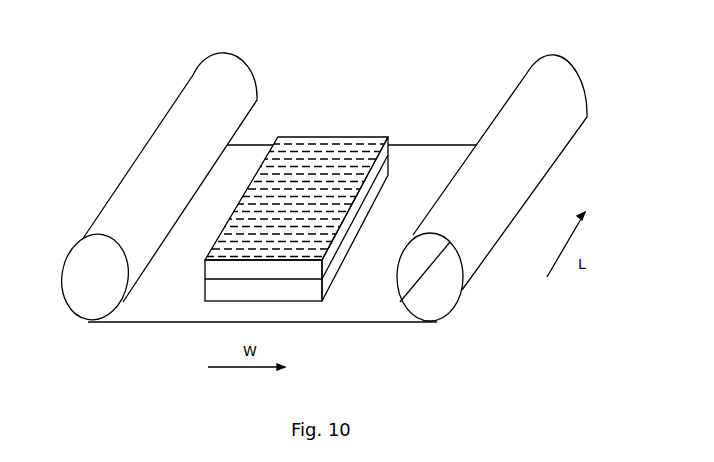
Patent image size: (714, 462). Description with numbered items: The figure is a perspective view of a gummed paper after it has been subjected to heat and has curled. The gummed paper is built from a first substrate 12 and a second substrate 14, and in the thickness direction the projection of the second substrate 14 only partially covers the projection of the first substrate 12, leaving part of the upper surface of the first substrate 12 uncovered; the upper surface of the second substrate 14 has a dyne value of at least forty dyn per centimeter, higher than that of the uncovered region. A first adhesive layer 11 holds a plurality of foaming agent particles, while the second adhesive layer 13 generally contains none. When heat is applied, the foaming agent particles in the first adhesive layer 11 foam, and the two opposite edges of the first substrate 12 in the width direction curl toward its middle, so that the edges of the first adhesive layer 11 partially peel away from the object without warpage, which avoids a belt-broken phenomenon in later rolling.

The first adhesive layer 11 is at (193, 75).
The first substrate 12 is at (265, 195).
The second adhesive layer 13 is at (297, 290).
The second substrate 14 is at (387, 150).